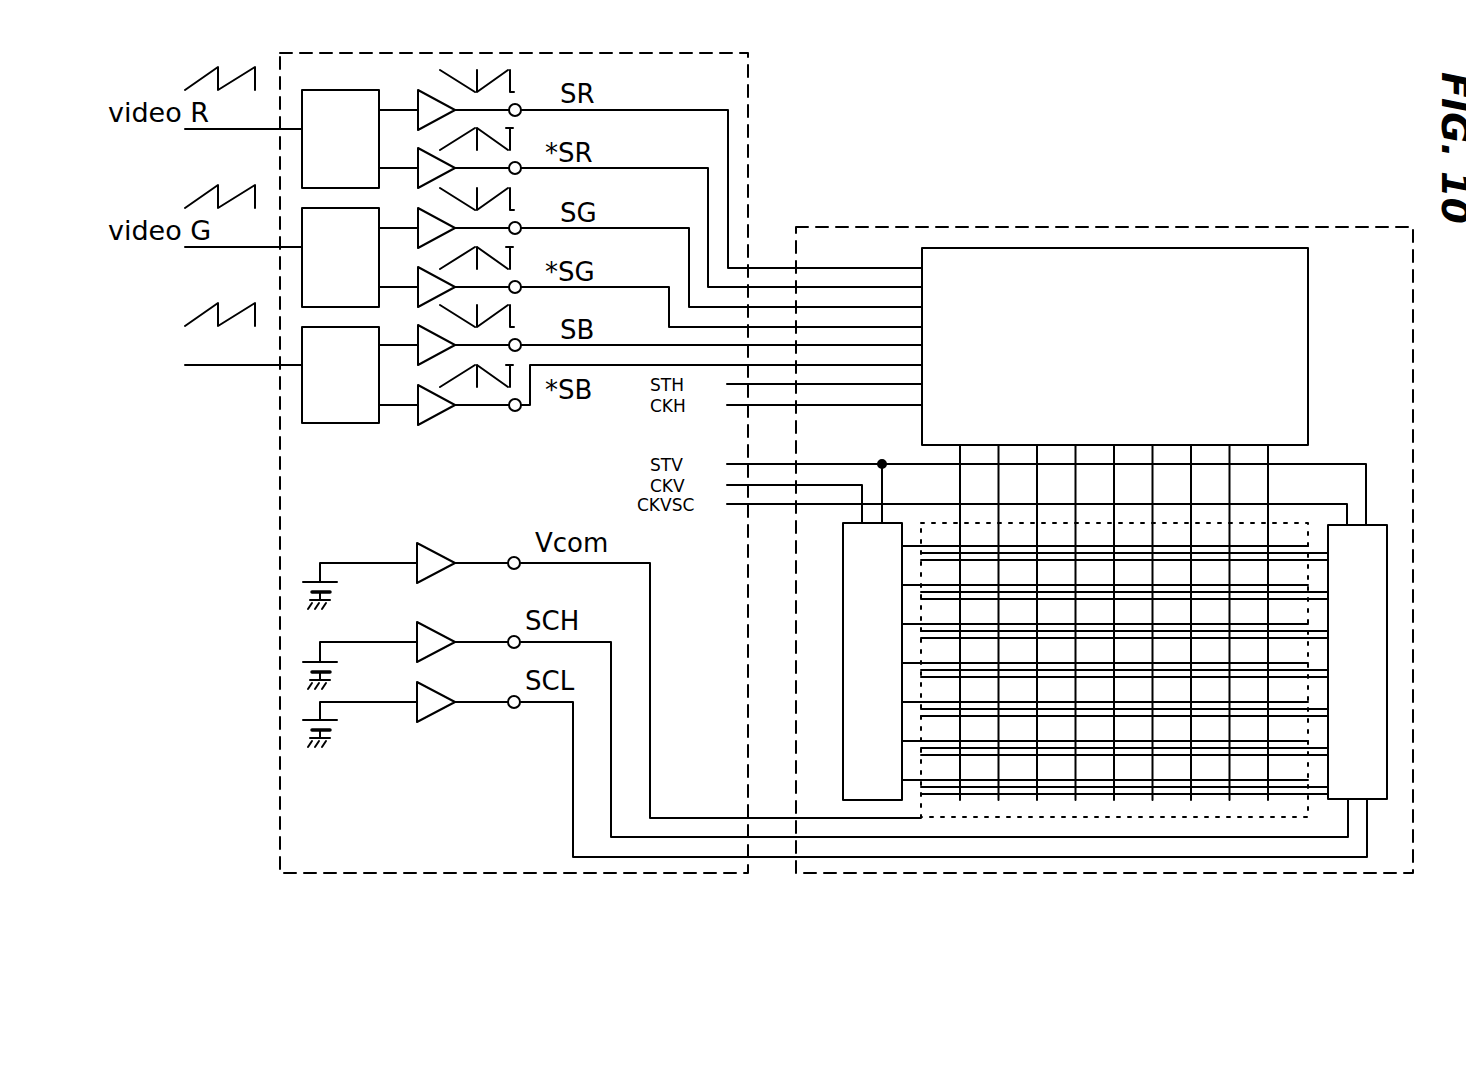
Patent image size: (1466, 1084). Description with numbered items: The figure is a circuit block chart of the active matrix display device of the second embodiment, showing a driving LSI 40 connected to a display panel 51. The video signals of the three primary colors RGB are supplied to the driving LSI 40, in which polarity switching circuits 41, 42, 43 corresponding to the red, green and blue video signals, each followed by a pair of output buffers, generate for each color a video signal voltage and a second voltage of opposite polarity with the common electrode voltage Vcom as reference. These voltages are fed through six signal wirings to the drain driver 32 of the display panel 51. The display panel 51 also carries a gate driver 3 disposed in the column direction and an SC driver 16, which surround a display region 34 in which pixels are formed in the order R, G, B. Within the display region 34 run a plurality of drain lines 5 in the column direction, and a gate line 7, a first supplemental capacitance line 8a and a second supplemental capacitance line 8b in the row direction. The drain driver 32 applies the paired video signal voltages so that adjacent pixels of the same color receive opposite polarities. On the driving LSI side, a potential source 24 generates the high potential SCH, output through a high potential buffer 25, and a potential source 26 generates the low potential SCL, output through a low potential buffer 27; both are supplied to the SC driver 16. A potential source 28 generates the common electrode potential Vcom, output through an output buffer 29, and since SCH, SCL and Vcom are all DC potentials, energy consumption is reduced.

The driving LSI 40 is at (764, 137).
The polarity switching circuit 41 is at (303, 157).
The polarity switching circuit 42 is at (303, 284).
The polarity switching circuit 43 is at (303, 404).
The display panel 51 is at (1078, 216).
The drain driver 32 is at (1298, 356).
The gate driver 3 is at (866, 766).
The SC driver 16 is at (1378, 749).
The display region 34 is at (1216, 806).
The drain line 5 is at (1270, 484).
The gate line 7 is at (942, 550).
The first supplemental capacitance line 8a is at (1322, 554).
The second supplemental capacitance line 8b is at (1300, 565).
The potential source 28 is at (342, 592).
The output buffer 29 is at (438, 572).
The potential source 24 is at (342, 672).
The high potential buffer 25 is at (440, 651).
The potential source 26 is at (342, 732).
The low potential buffer 27 is at (438, 711).